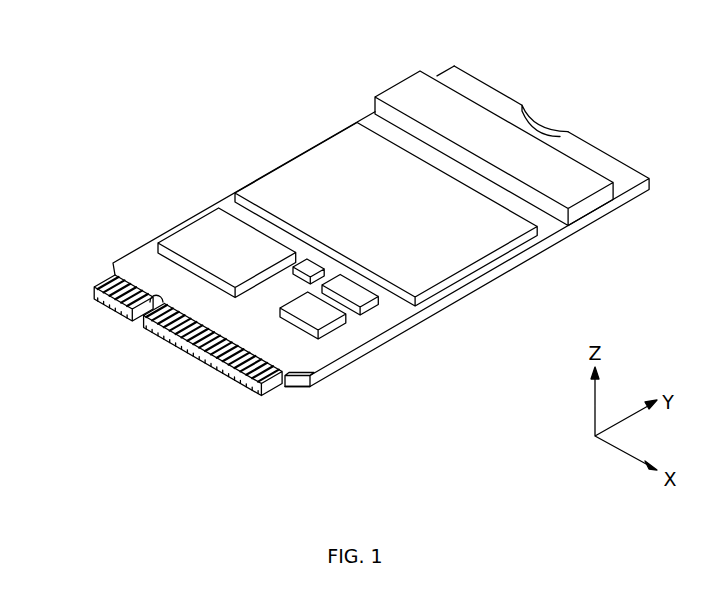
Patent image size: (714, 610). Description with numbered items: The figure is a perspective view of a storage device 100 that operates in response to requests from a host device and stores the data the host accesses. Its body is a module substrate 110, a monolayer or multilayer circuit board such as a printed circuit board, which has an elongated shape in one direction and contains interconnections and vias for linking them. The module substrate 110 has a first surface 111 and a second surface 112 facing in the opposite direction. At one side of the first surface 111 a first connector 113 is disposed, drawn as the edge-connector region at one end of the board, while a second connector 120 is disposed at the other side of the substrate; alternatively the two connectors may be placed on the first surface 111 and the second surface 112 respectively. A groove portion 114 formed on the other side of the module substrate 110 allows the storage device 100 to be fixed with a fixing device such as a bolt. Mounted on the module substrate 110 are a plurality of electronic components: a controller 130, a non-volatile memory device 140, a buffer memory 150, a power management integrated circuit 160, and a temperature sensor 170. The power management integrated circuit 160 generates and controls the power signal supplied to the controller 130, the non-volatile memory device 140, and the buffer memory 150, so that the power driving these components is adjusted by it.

The storage device 100 is at (238, 96).
The module substrate 110 is at (143, 262).
The first surface 111 is at (305, 366).
The second surface 112 is at (300, 395).
The first connector 113 is at (105, 284).
The groove portion 114 is at (545, 117).
The second connector 120 is at (405, 88).
The controller 130 is at (203, 228).
The non-volatile memory device 140 is at (322, 158).
The buffer memory 150 is at (330, 318).
The power management integrated circuit 160 is at (362, 298).
The temperature sensor 170 is at (308, 266).